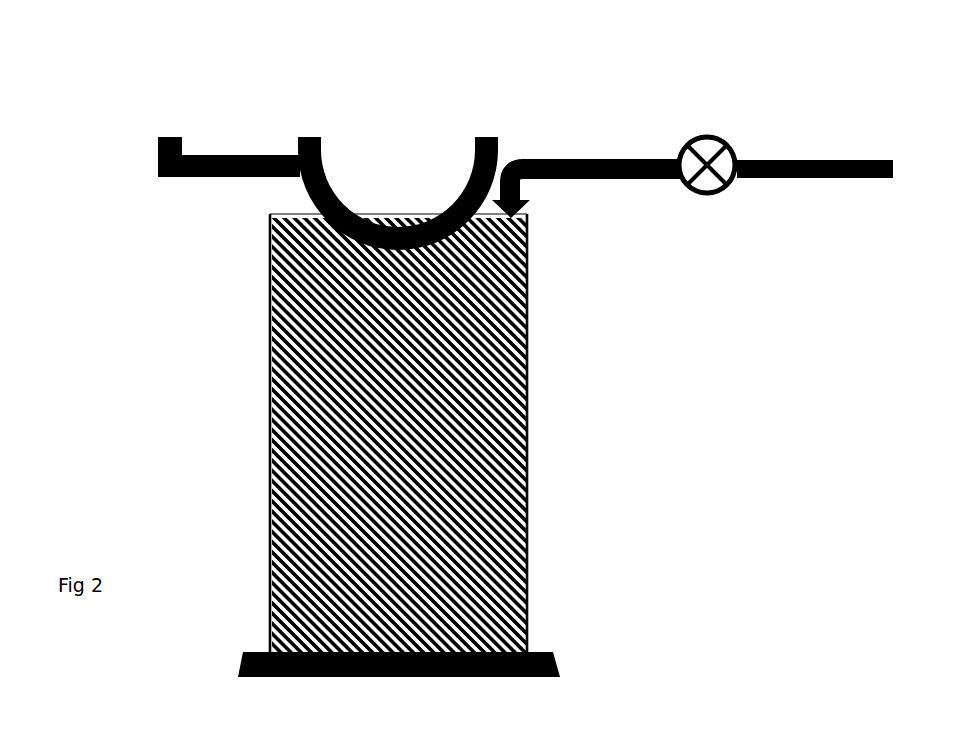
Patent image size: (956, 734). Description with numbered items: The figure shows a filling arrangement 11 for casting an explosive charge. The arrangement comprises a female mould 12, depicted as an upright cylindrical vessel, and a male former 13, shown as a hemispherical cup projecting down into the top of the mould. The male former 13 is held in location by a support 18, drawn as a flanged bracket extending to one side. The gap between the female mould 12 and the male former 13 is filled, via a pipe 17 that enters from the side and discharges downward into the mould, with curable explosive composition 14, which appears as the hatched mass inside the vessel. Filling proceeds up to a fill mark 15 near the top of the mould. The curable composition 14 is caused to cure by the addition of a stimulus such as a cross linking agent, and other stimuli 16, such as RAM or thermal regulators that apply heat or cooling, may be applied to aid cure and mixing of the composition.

The filling arrangement 11 is at (207, 448).
The female mould 12 is at (528, 445).
The male former 13 is at (498, 135).
The curable explosive composition 14 is at (307, 417).
The fill mark 15 is at (292, 215).
The stimuli 16 is at (558, 662).
The pipe 17 is at (632, 160).
The support 18 is at (218, 155).